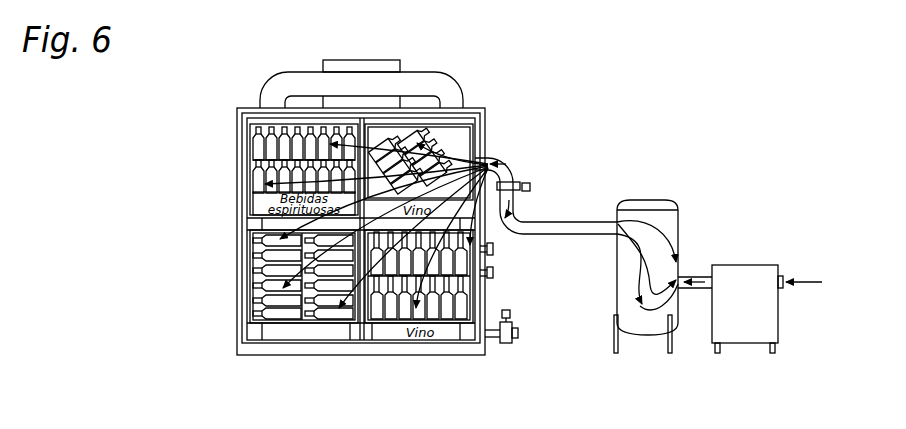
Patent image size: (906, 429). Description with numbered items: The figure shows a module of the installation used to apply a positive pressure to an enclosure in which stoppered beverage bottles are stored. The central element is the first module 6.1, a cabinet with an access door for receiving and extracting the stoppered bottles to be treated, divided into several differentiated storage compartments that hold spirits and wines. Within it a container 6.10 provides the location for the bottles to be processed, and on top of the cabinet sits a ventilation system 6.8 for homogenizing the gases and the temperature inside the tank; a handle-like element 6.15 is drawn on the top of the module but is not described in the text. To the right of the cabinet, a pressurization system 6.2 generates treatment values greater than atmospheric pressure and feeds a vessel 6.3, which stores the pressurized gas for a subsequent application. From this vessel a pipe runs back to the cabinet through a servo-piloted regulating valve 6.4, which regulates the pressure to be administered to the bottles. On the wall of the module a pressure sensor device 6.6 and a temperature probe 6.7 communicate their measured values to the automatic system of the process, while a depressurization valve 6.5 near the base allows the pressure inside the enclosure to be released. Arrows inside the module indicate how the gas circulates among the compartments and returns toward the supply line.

The first module 6.1 is at (234, 138).
The carrying handle 6.15 is at (261, 76).
The ventilation system 6.8 is at (346, 57).
The container 6.10 is at (249, 261).
The servo-piloted regulating valve 6.4 is at (531, 181).
The pressure sensor device 6.6 is at (496, 255).
The temperature probe 6.7 is at (497, 281).
The depressurization valve 6.5 is at (512, 347).
The vessel 6.3 is at (678, 200).
The pressurization system 6.2 is at (770, 262).